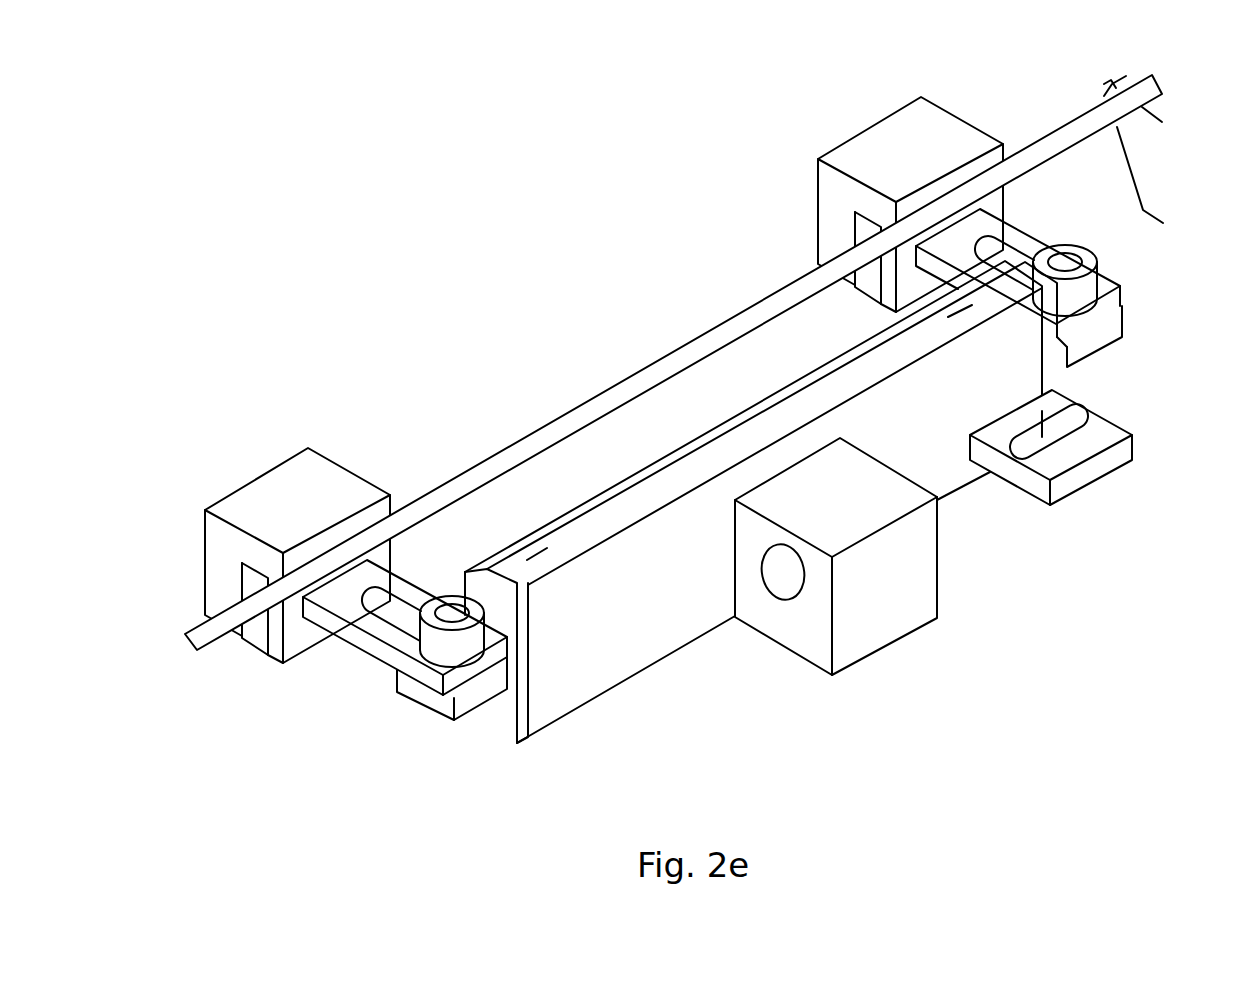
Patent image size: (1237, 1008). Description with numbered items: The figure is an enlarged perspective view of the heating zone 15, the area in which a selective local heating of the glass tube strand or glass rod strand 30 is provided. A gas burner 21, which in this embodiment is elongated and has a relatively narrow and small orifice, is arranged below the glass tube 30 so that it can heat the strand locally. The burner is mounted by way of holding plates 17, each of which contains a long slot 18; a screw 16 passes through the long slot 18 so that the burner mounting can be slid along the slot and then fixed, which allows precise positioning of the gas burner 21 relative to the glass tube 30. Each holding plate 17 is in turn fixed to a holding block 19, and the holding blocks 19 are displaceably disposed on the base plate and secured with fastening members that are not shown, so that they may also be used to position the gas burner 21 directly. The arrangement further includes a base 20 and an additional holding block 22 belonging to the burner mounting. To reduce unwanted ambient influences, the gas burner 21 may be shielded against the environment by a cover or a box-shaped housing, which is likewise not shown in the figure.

The heating zone 15 is at (505, 202).
The screw 16 is at (1093, 284).
The holding plate 17 is at (985, 217).
The long slot 18 is at (988, 250).
The holding block 19 is at (930, 122).
The base 20 is at (448, 712).
The gas burner 21 is at (615, 632).
The holding block 22 is at (871, 624).
The glass tube 30 is at (577, 418).